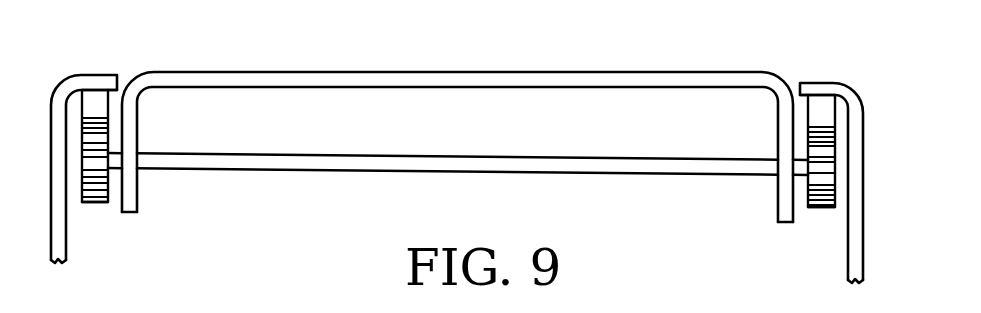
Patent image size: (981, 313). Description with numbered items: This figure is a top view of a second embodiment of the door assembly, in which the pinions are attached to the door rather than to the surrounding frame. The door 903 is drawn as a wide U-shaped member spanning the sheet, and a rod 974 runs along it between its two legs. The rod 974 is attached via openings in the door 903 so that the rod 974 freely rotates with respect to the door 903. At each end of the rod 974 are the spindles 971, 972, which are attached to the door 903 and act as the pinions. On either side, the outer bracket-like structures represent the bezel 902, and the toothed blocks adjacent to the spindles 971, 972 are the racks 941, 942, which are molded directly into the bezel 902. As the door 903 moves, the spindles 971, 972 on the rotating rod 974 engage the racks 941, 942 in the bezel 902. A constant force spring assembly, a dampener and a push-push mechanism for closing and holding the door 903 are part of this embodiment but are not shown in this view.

The door 903 is at (527, 73).
The rod 974 is at (428, 173).
The bezel 902 is at (66, 233).
The rack 942 is at (95, 100).
The rack 941 is at (823, 110).
The spindle 972 is at (108, 202).
The spindle 971 is at (815, 208).